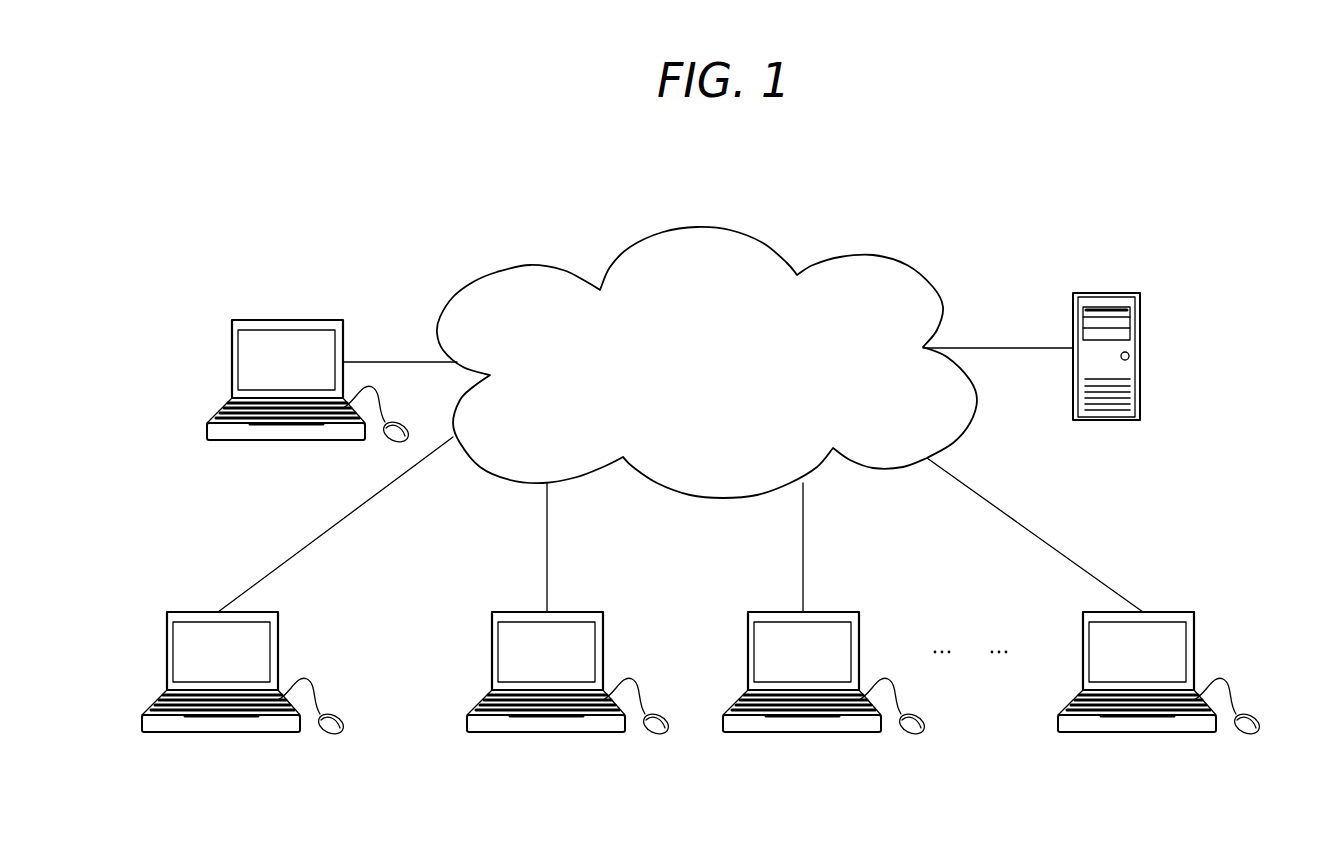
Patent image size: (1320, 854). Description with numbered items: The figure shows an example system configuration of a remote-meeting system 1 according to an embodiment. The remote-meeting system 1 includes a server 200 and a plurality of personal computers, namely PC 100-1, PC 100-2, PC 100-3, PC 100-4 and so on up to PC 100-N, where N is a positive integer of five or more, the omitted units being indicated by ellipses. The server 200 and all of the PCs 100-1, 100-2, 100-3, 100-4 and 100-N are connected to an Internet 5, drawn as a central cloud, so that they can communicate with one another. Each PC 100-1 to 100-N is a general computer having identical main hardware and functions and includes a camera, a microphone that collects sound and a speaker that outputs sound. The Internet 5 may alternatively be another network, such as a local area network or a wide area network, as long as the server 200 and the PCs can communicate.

The remote-meeting system 1 is at (1101, 177).
The Internet 5 is at (733, 232).
The personal computer 100-1 is at (320, 320).
The personal computer 100-2 is at (252, 655).
The personal computer 100-3 is at (577, 655).
The personal computer 100-4 is at (826, 655).
The personal computer 100-N is at (1161, 655).
The server 200 is at (1123, 293).